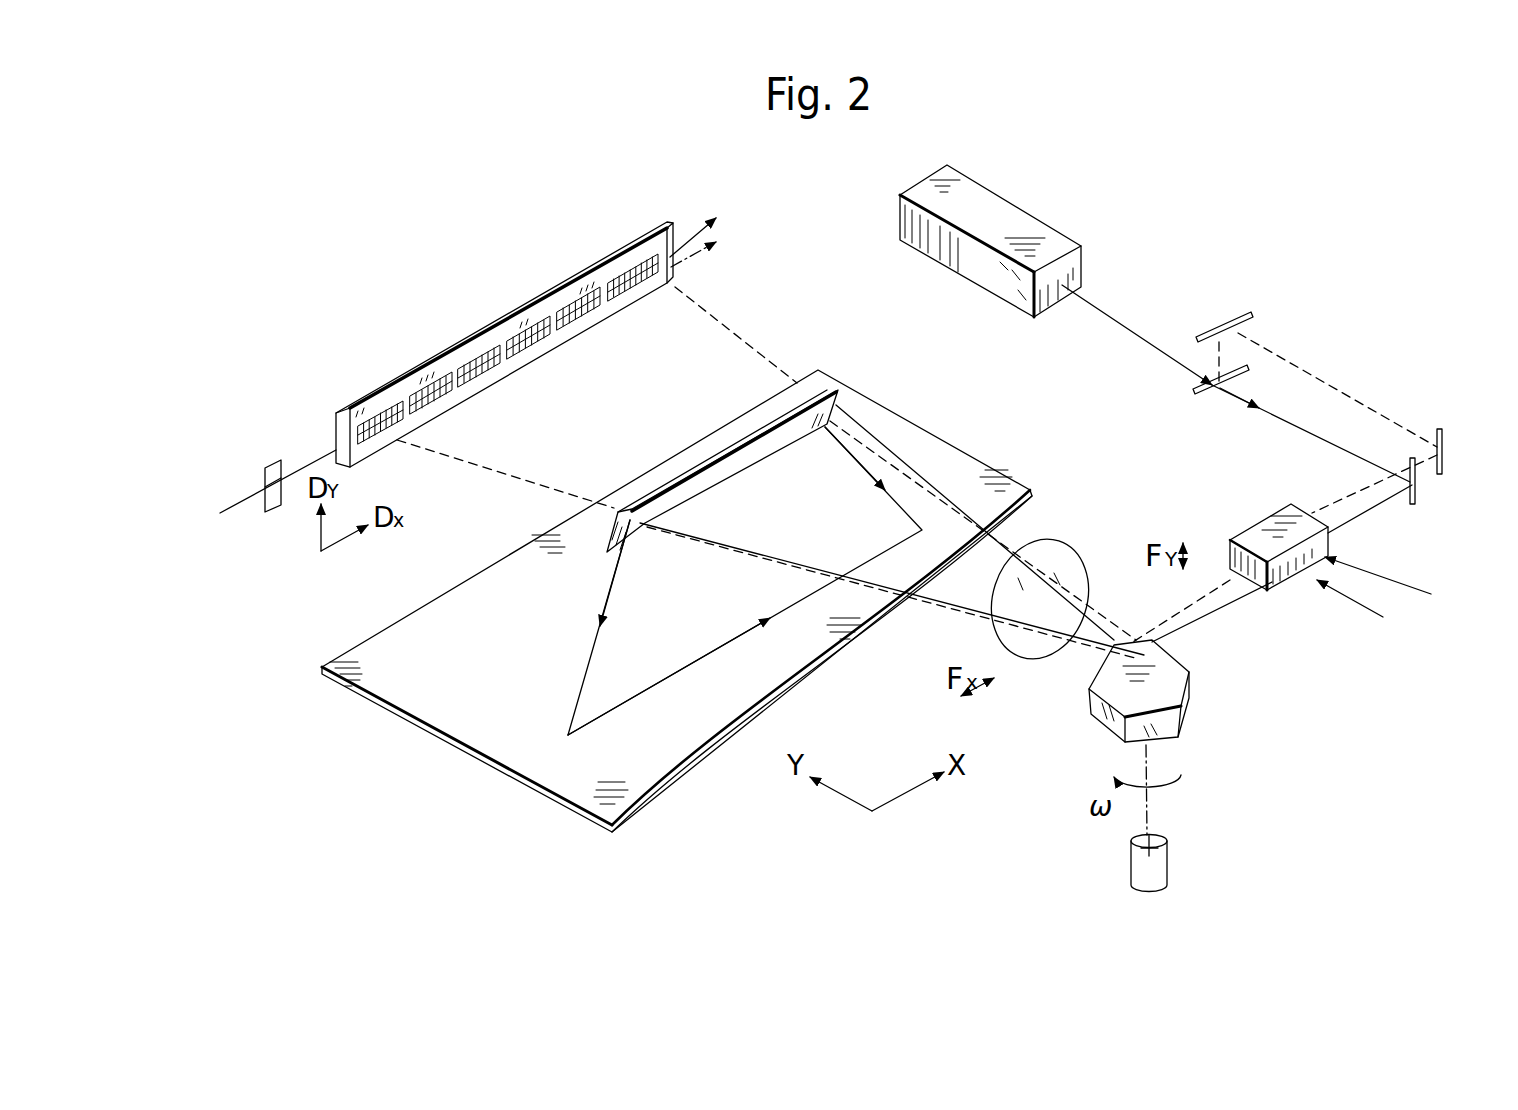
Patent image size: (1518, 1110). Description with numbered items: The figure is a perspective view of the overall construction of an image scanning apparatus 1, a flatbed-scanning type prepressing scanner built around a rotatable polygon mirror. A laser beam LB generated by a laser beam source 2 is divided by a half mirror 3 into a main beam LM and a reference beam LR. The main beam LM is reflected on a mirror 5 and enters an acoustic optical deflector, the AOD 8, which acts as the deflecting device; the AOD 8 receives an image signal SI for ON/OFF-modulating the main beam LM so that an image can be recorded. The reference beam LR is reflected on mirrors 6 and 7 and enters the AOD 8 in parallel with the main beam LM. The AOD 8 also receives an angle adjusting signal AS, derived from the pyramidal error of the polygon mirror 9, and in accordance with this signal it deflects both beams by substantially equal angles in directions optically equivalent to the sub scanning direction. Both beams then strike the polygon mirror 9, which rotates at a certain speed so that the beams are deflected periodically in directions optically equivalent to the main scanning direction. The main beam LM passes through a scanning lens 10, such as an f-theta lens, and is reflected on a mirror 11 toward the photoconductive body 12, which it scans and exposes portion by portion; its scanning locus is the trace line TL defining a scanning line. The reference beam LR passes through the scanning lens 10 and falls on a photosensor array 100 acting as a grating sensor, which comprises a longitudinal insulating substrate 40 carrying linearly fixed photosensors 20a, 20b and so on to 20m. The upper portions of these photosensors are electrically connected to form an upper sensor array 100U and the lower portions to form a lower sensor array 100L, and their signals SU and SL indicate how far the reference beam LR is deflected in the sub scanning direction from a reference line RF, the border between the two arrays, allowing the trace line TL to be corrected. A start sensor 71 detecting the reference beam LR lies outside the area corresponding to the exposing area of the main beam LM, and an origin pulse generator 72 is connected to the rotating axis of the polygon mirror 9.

The image scanning apparatus 1 is at (1319, 281).
The laser beam source 2 is at (1053, 222).
The half mirror 3 is at (1193, 388).
The mirror 5 is at (1415, 495).
The mirror 6 is at (1251, 312).
The mirror 7 is at (1442, 434).
The acoustic optical deflector (AOD) 8 is at (1270, 588).
The polygon mirror 9 is at (1191, 689).
The scanning lens 10 is at (1061, 543).
The mirror 11 is at (732, 449).
The photoconductive body 12 is at (449, 675).
The photosensor 20a is at (380, 413).
The photosensor 20b is at (430, 387).
The photosensor 20m is at (633, 255).
The longitudinal insulating substrate 40 is at (483, 328).
The start sensor 71 is at (270, 512).
The origin pulse generator 72 is at (1168, 861).
The photosensor array 100 is at (435, 327).
The upper sensor array 100U is at (336, 419).
The lower sensor array 100L is at (336, 456).
The laser beam LB is at (1236, 383).
The reference beam LR is at (1278, 353).
The main beam LM is at (1242, 394).
The trace line TL is at (677, 672).
The reference line RF is at (232, 510).
The angle adjusting signal AS is at (1379, 586).
The image signal SI is at (1352, 611).
The upper sensor array signal SU is at (711, 223).
The lower sensor array signal SL is at (711, 243).